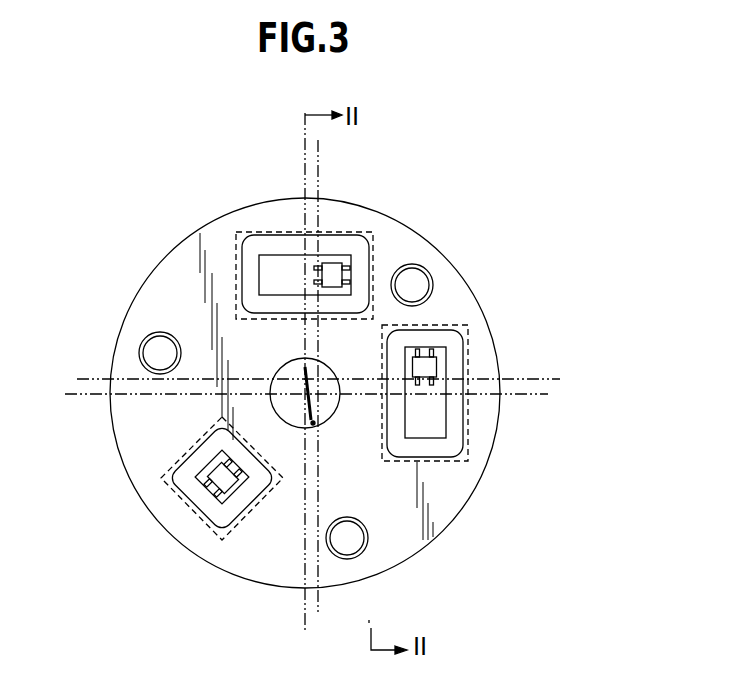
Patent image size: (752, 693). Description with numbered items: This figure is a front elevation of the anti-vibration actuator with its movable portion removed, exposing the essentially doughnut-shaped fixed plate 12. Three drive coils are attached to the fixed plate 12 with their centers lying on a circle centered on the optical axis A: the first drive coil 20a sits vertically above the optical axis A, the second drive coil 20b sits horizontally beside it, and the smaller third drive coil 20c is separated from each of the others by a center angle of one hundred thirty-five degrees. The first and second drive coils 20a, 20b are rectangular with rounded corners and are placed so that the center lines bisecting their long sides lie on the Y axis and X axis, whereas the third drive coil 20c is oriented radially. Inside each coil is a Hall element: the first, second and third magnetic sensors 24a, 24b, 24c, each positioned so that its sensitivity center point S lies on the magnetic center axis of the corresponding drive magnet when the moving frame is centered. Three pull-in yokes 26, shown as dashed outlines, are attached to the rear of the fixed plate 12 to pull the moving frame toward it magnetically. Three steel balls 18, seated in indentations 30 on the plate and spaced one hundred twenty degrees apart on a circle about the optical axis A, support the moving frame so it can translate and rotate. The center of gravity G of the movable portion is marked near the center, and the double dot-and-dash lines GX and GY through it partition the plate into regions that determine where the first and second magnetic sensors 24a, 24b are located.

The fixed plate 12 is at (204, 226).
The steel balls 18 is at (433, 288).
The hole inner wall / bushing 30 is at (410, 282).
The pull-in yokes 26 is at (288, 231).
The first magnetic sensor 24a is at (333, 257).
The second magnetic sensor 24b is at (445, 348).
The third magnetic sensor 24c is at (208, 519).
The first drive coil 20a is at (342, 264).
The second drive coil 20b is at (435, 355).
The third drive coil 20c is at (222, 486).
The sensitivity center point S is at (333, 275).
The optical axis A is at (272, 378).
The center of gravity G is at (316, 376).
The X axis X is at (315, 397).
The Y axis Y is at (296, 373).
The double dot-and-dash line GX is at (337, 375).
The double dot-and-dash line GY is at (336, 377).